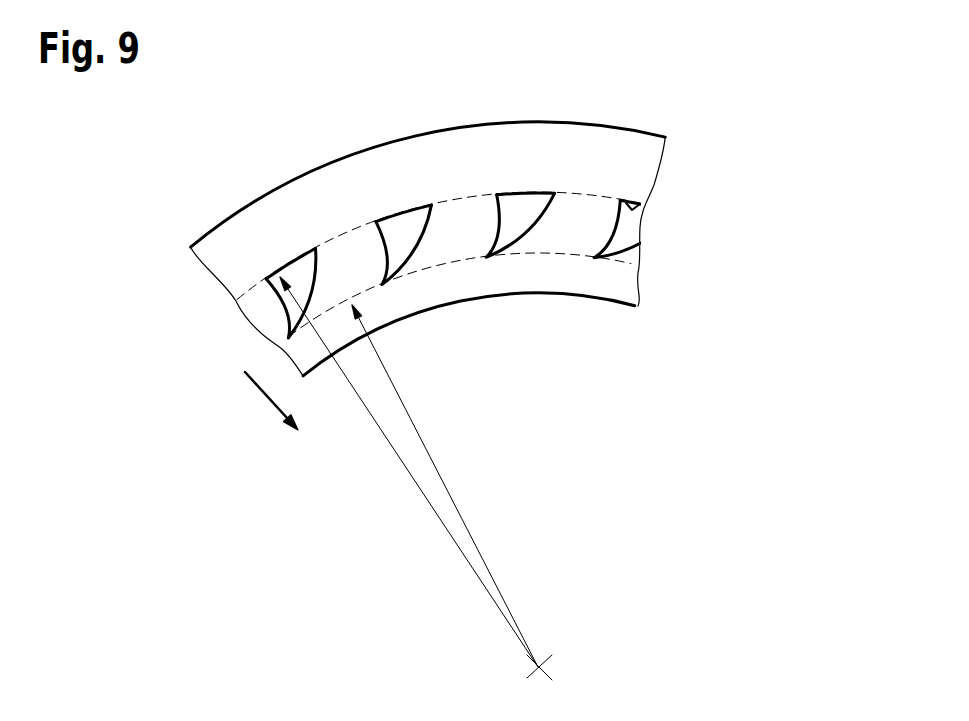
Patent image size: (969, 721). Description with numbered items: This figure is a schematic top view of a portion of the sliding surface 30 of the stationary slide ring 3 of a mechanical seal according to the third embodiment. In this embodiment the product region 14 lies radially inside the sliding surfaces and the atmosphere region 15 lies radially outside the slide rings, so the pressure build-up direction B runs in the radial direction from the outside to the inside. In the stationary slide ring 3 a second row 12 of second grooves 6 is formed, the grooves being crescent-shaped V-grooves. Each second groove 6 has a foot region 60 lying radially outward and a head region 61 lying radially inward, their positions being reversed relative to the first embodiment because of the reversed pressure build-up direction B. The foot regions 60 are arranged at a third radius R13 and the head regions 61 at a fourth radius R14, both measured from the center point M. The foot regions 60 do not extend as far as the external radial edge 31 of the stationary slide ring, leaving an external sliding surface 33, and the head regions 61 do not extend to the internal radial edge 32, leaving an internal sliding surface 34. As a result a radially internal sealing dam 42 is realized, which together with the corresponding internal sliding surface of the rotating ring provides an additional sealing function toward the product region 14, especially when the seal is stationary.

The stationary slide ring 3 is at (204, 155).
The atmosphere region 15 is at (323, 137).
The external radial edge of the stationary slide ring 31 is at (414, 136).
The sliding surface of the stationary slide ring 30 is at (462, 183).
The external sliding surface of the stationary slide ring 33 is at (585, 143).
The foot region of the second groove 60 is at (641, 208).
The second row of second grooves 12 is at (659, 231).
The radially internal sealing dam 42 is at (658, 297).
The second groove 6 is at (289, 307).
The head region of the second groove 61 is at (487, 256).
The internal radial edge of the stationary slide ring 32 is at (542, 300).
The internal sliding surface of the stationary slide ring 34 is at (622, 296).
The product region 14 is at (650, 432).
The third radius R13 is at (411, 474).
The fourth radius R14 is at (433, 460).
The pressure build-up direction B is at (263, 421).
The center point M is at (553, 668).